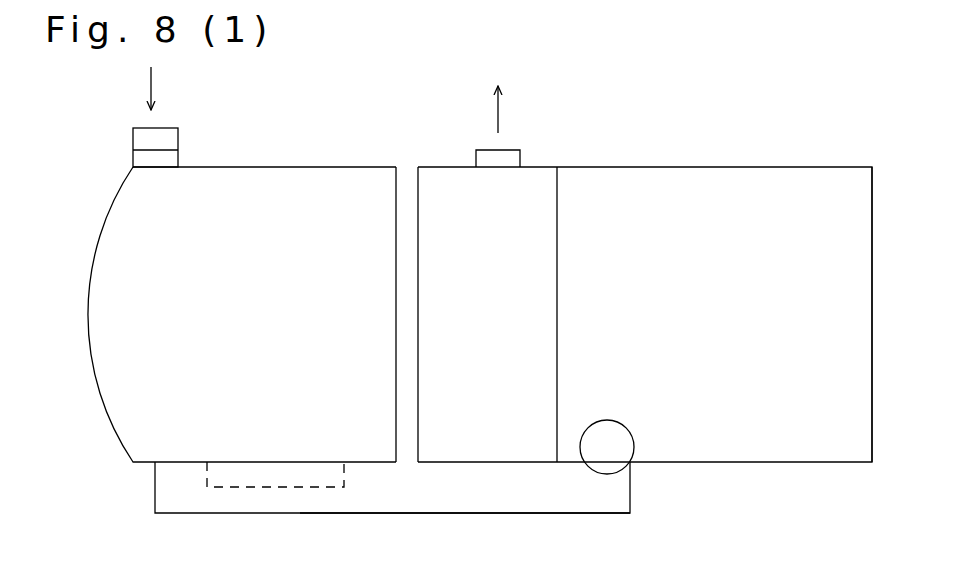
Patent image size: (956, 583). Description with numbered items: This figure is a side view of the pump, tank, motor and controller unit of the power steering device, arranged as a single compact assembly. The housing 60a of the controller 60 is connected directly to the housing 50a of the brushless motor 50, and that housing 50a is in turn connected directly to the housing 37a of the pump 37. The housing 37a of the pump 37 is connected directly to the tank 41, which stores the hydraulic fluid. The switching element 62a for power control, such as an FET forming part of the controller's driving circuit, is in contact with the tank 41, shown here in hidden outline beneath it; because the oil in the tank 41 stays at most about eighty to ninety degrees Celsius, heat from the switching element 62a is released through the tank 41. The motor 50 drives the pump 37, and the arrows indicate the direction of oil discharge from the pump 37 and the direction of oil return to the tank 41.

The tank 41 is at (295, 185).
The pump 37 is at (539, 160).
The housing of the pump 37a is at (432, 190).
The brushless motor 50 is at (738, 163).
The housing of the motor 50a is at (820, 177).
The controller 60 is at (637, 492).
The housing of the controller 60a is at (553, 500).
The switching element 62a is at (305, 488).